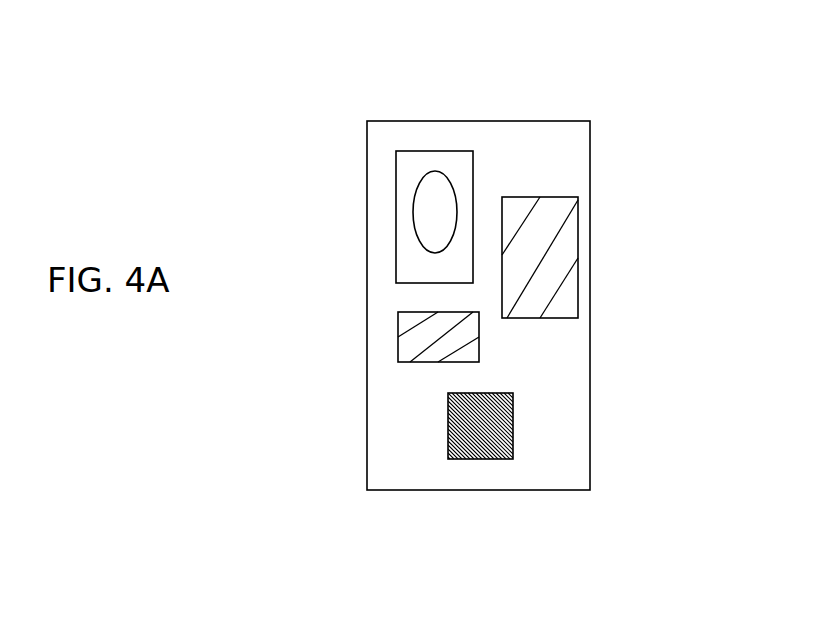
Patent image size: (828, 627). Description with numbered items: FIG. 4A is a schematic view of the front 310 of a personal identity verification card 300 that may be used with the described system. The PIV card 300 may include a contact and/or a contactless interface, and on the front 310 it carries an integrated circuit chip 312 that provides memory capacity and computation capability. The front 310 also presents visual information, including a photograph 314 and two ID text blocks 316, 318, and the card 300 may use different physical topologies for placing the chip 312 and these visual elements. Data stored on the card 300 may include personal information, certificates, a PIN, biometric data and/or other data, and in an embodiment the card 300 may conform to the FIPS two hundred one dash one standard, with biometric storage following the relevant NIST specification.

The PIV card 300 is at (286, 178).
The front 310 is at (605, 122).
The integrated circuit chip 312 is at (480, 459).
The photograph 314 is at (434, 150).
The ID text block 316 is at (520, 197).
The ID text block 318 is at (398, 343).